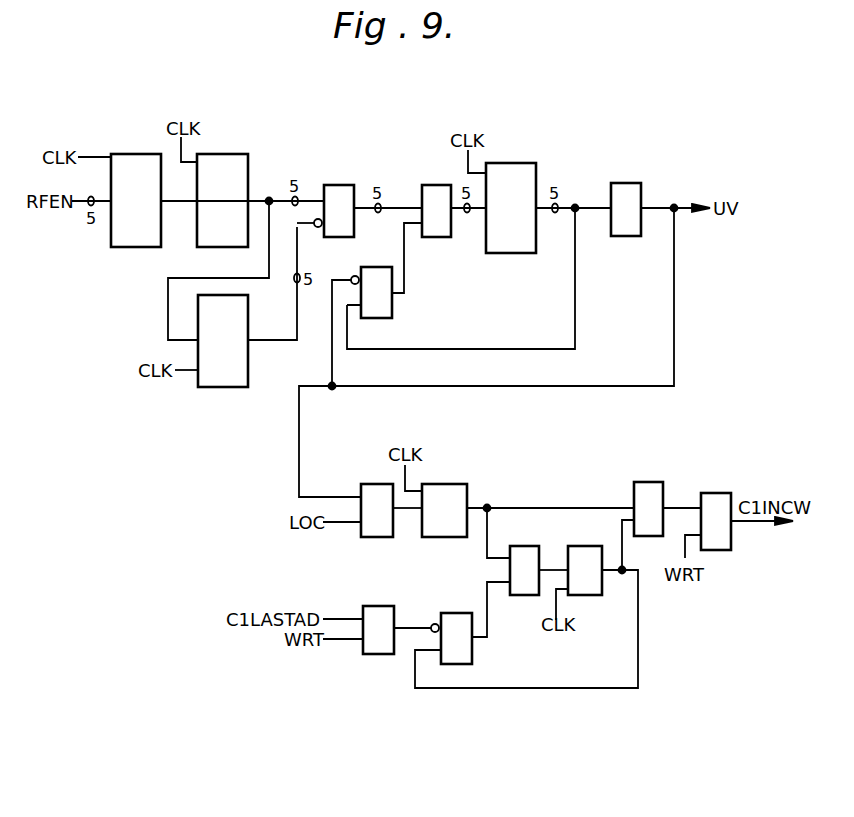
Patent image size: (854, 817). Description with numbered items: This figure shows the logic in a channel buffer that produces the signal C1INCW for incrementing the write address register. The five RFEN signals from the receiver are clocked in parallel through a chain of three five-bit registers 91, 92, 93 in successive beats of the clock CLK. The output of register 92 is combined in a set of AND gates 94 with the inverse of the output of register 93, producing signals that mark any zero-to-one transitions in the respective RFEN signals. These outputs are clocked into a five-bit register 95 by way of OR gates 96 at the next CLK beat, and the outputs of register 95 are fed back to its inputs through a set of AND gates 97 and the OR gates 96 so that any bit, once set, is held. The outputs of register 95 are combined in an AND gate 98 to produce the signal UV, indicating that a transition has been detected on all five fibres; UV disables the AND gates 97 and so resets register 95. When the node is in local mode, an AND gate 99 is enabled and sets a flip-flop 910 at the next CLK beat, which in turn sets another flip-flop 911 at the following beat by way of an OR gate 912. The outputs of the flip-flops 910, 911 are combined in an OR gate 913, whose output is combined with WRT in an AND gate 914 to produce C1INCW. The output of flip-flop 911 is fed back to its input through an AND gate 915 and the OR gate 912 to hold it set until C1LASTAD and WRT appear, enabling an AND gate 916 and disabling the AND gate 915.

The five-bit register 91 is at (134, 160).
The five-bit register 92 is at (231, 160).
The five-bit register 93 is at (232, 381).
The set of AND gates 94 is at (336, 185).
The 5-bit register 95 is at (533, 168).
The OR gates 96 is at (434, 185).
The set of AND gates 97 is at (389, 311).
The AND gate 98 is at (628, 186).
The AND gate 99 is at (376, 488).
The flip-flop 910 is at (455, 488).
The flip-flop 911 is at (578, 547).
The OR gate 912 is at (528, 590).
The OR gate 913 is at (652, 487).
The AND gate 914 is at (717, 496).
The AND gate 915 is at (447, 616).
The AND gate 916 is at (386, 608).